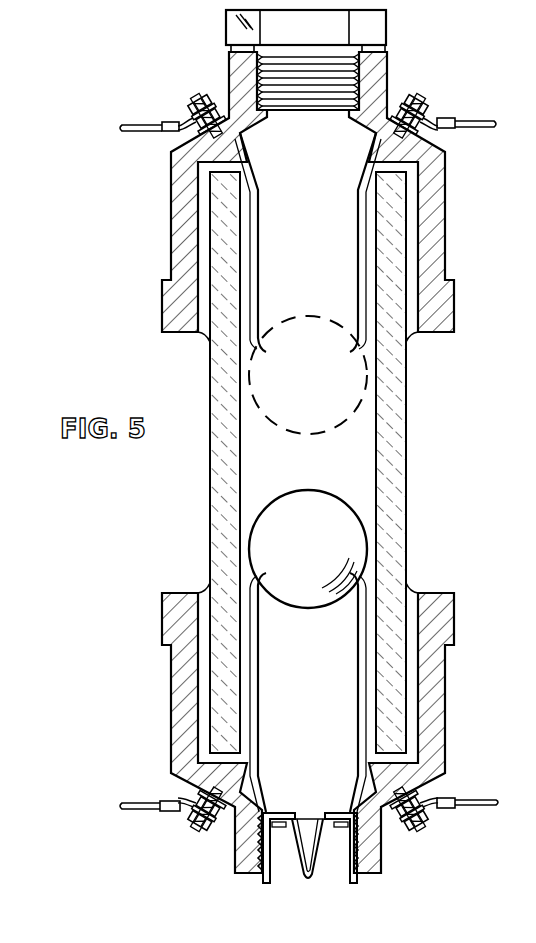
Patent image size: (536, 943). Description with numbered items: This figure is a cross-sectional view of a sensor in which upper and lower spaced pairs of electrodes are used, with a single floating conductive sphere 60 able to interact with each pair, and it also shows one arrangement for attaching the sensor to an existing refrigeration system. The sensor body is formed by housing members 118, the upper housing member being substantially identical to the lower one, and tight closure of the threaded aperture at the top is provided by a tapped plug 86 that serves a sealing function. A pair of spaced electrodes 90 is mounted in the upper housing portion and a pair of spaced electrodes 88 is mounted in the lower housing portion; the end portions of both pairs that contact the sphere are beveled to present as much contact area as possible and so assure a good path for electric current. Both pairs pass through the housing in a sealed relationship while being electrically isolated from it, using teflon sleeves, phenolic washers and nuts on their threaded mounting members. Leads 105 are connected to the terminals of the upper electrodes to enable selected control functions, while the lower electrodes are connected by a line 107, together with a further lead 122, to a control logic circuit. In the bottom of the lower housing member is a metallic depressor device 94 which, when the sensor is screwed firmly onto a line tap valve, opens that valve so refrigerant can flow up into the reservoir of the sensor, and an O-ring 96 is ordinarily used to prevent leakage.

The tapped plug 86 is at (380, 24).
The leads 105 is at (163, 121).
The housing 118 is at (448, 205).
The pair of spaced electrodes 90 is at (372, 264).
The ball 60 is at (263, 545).
The pair of spaced electrodes 88 is at (358, 593).
The line 107 is at (143, 803).
The electrical lead 122 is at (455, 800).
The metallic depressor device 94 is at (300, 877).
The O-ring 96 is at (333, 830).